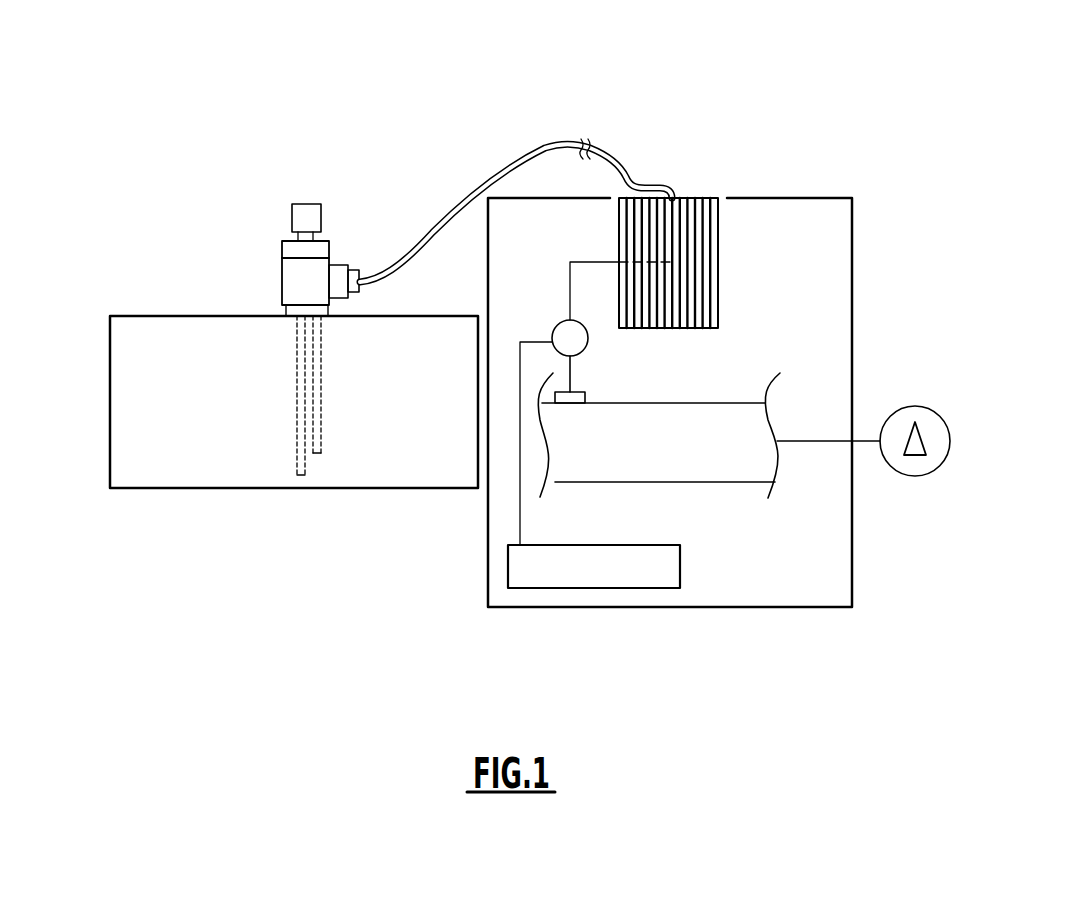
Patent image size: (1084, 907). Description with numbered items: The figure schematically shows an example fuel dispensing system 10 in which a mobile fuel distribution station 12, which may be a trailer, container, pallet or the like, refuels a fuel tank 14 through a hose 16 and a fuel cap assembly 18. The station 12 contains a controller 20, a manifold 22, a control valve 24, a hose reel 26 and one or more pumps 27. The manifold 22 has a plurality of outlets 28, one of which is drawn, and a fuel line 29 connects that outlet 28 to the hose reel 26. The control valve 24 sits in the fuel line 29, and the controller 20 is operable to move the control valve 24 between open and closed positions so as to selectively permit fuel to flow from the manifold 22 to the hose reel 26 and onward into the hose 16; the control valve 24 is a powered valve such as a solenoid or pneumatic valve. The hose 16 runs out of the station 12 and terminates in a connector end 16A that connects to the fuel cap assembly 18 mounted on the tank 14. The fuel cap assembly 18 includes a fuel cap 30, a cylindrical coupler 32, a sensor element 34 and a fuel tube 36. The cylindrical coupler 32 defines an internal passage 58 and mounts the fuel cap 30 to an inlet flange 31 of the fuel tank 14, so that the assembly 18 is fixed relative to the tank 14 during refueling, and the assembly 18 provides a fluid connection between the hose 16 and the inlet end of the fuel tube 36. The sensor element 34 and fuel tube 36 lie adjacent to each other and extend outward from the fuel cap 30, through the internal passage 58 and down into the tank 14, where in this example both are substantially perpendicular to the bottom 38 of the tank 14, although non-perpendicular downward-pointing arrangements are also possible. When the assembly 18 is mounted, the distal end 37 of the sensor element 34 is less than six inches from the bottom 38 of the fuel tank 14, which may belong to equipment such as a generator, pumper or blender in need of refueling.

The fuel dispensing system 10 is at (773, 72).
The mobile fuel distribution station 12 is at (852, 338).
The fuel tank 14 is at (110, 375).
The hose 16 is at (618, 163).
The connector end 16A is at (358, 270).
The fuel cap assembly 18 is at (226, 253).
The controller 20 is at (680, 570).
The manifold 22 is at (620, 482).
The control valve 24 is at (556, 328).
The hose reel 26 is at (718, 290).
The pump 27 is at (915, 476).
The outlet 28 is at (573, 402).
The fuel line 29 is at (572, 378).
The fuel cap 30 is at (285, 250).
The inlet flange 31 is at (285, 307).
The cylindrical coupler 32 is at (292, 280).
The sensor element 34 is at (300, 370).
The fuel tube 36 is at (318, 395).
The distal end 37 is at (297, 478).
The bottom 38 is at (167, 484).
The internal passage 58 is at (291, 311).